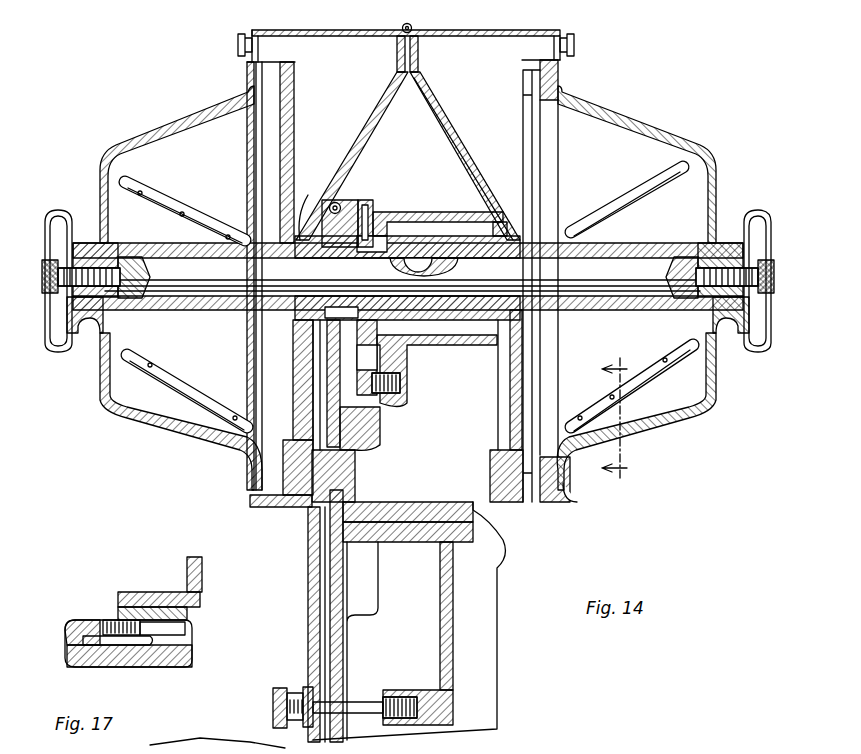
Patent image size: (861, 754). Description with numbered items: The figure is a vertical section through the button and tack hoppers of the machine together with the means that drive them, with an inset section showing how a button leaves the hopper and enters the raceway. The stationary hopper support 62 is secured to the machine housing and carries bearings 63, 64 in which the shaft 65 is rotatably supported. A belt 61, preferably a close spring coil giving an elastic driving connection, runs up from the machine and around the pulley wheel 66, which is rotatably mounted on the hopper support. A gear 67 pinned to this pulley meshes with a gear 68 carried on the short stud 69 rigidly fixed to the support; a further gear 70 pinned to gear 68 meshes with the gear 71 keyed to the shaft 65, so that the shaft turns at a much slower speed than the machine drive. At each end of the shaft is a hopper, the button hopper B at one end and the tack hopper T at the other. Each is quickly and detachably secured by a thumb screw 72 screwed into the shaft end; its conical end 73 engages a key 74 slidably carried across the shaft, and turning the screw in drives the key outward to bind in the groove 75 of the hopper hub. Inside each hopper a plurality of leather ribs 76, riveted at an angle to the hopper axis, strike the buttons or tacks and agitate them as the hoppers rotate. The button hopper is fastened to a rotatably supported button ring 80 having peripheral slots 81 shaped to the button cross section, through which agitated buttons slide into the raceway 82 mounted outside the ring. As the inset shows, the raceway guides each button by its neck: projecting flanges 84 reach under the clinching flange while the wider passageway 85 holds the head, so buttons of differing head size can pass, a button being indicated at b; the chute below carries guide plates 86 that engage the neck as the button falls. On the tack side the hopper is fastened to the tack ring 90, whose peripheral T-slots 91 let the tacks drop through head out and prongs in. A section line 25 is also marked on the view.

In FIG. 14, the T-slots 91 is at (278, 70).
In FIG. 14, the button ring 80 is at (580, 64).
In FIG. 14, the tack hopper T is at (188, 120).
In FIG. 14, the button hopper B is at (645, 122).
In FIG. 14, the ribs 76 is at (182, 197).
In FIG. 14, the thumb screw 72 is at (78, 226).
In FIG. 14, the groove 75 is at (130, 244).
In FIG. 14, the key 74 is at (160, 291).
In FIG. 14, the conical end 73 is at (125, 318).
In FIG. 14, the shaft 65 is at (647, 250).
In FIG. 14, the bearing 64 is at (306, 200).
In FIG. 14, the belt 61 is at (346, 216).
In FIG. 14, the pulley wheel 66 is at (362, 214).
In FIG. 14, the gear 71 is at (392, 202).
In FIG. 14, the gear 67 is at (380, 236).
In FIG. 14, the bearing 63 is at (470, 240).
In FIG. 14, the short stud 69 is at (405, 386).
In FIG. 14, the gear 70 is at (385, 426).
In FIG. 14, the gear 68 is at (385, 432).
In FIG. 14, the tack ring 90 is at (250, 482).
In FIG. 14, the slots 81 is at (548, 512).
In FIG. 17, the slots 81 is at (180, 626).
In FIG. 14, the hopper support 62 is at (497, 520).
In FIG. 14, the section line 25 is at (628, 411).
In FIG. 14, the guide plates 86 is at (673, 742).
In FIG. 17, the raceway 82 is at (118, 592).
In FIG. 17, the projecting flanges 84 is at (92, 625).
In FIG. 17, the passageway 85 is at (68, 646).
In FIG. 17, the ball b is at (128, 648).